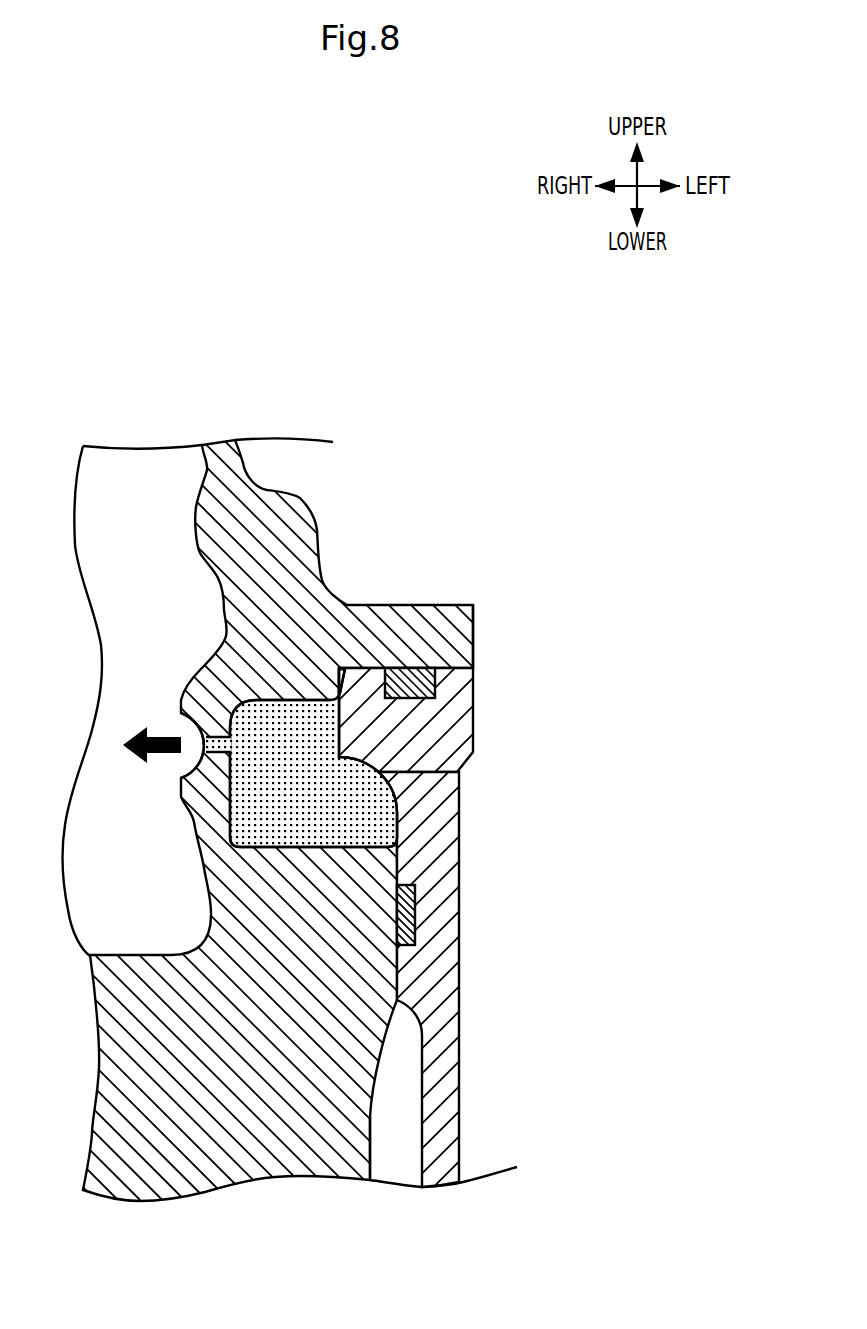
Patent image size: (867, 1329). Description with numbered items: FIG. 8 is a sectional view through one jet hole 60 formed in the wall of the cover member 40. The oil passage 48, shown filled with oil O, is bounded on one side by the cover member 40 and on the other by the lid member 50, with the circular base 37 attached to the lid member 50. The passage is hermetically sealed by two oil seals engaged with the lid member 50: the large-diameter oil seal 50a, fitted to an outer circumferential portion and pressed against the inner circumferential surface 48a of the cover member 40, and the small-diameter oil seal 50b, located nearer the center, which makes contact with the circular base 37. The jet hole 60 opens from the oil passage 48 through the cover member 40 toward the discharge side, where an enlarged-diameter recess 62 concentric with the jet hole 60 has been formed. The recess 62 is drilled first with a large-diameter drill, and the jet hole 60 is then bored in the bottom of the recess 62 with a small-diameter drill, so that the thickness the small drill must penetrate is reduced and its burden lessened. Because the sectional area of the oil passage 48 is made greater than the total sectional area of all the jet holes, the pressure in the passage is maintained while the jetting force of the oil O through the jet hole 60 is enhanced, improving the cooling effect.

The cover member 40 is at (318, 518).
The circular base 37 is at (367, 975).
The oil passage 48 is at (326, 792).
The inner circumferential surface 48a is at (450, 652).
The lid member 50 is at (443, 830).
The large-diameter oil seal 50a is at (403, 668).
The small-diameter oil seal 50b is at (415, 915).
The oil O is at (347, 824).
The jet hole 60 is at (203, 744).
The enlarged-diameter recess 62 is at (191, 718).